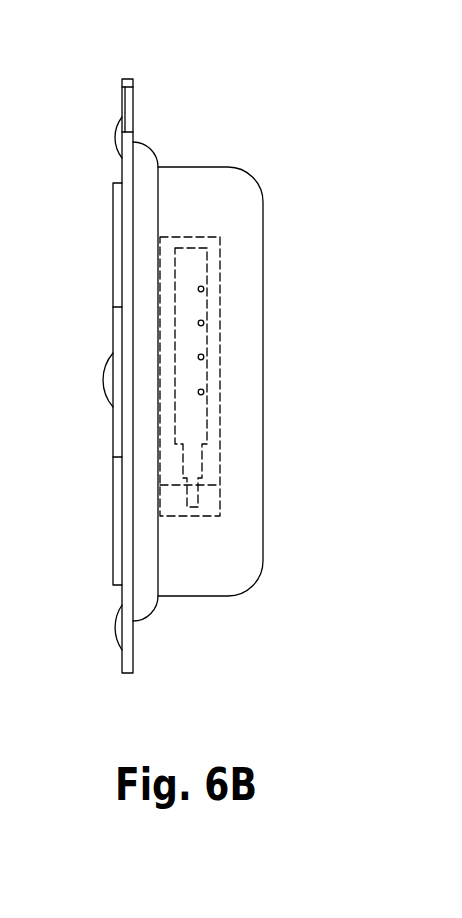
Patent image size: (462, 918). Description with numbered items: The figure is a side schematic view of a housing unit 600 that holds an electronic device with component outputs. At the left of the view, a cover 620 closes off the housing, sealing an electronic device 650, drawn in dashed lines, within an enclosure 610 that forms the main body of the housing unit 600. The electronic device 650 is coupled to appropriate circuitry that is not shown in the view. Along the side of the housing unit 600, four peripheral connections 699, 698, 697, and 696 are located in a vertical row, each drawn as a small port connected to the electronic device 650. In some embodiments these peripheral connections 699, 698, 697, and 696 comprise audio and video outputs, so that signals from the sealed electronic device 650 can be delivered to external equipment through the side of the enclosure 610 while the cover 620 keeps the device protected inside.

The housing unit 600 is at (372, 120).
The enclosure 610 is at (266, 625).
The cover 620 is at (113, 277).
The electronic device 650 is at (192, 260).
The peripheral connection 696 is at (204, 392).
The peripheral connection 697 is at (204, 357).
The peripheral connection 698 is at (204, 323).
The peripheral connection 699 is at (204, 289).